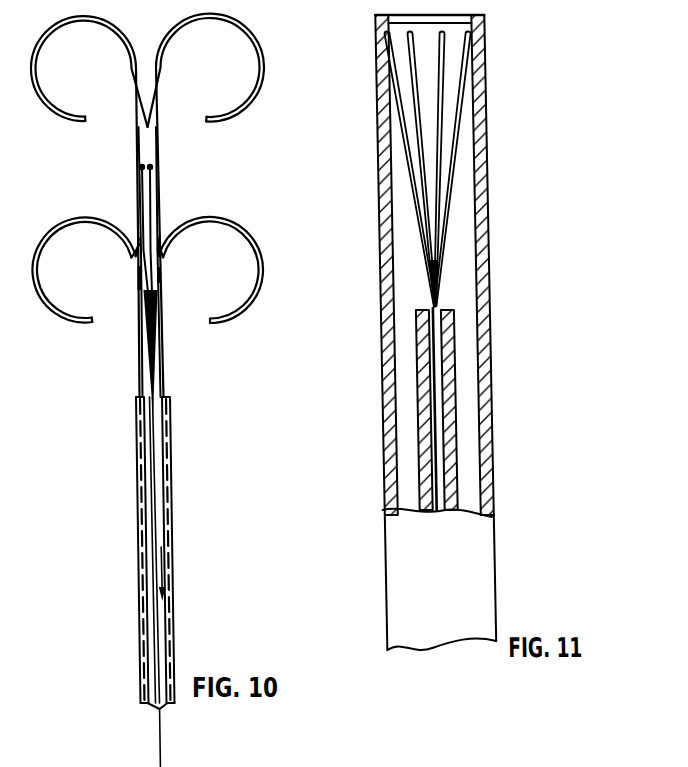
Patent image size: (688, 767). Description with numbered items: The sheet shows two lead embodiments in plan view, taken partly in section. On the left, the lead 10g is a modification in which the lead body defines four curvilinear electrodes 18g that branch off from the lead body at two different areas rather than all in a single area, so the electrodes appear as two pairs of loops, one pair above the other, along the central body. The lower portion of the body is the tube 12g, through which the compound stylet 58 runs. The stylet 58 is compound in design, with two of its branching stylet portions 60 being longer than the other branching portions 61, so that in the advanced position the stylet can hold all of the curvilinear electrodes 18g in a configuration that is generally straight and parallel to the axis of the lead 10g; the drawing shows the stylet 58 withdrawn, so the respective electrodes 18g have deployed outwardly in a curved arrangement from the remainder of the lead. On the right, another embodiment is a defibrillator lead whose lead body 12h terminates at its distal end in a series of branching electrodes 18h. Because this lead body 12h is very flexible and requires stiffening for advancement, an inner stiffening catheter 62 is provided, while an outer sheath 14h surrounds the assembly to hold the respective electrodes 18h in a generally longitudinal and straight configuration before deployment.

In FIG. 10, the lead body 10g is at (151, 390).
In FIG. 10, the catheter tube 12g is at (155, 582).
In FIG. 10, the curvilinear electrodes 18g is at (82, 128).
In FIG. 10, the compound stylet 58 is at (116, 582).
In FIG. 10, the branching stylet portions 60 is at (155, 305).
In FIG. 10, the branching stylet portions 61 is at (140, 287).
In FIG. 11, the lead body 12h is at (487, 409).
In FIG. 11, the outer sheath 14h is at (485, 257).
In FIG. 11, the branching electrodes 18h is at (453, 182).
In FIG. 11, the inner stiffening catheter 62 is at (448, 478).